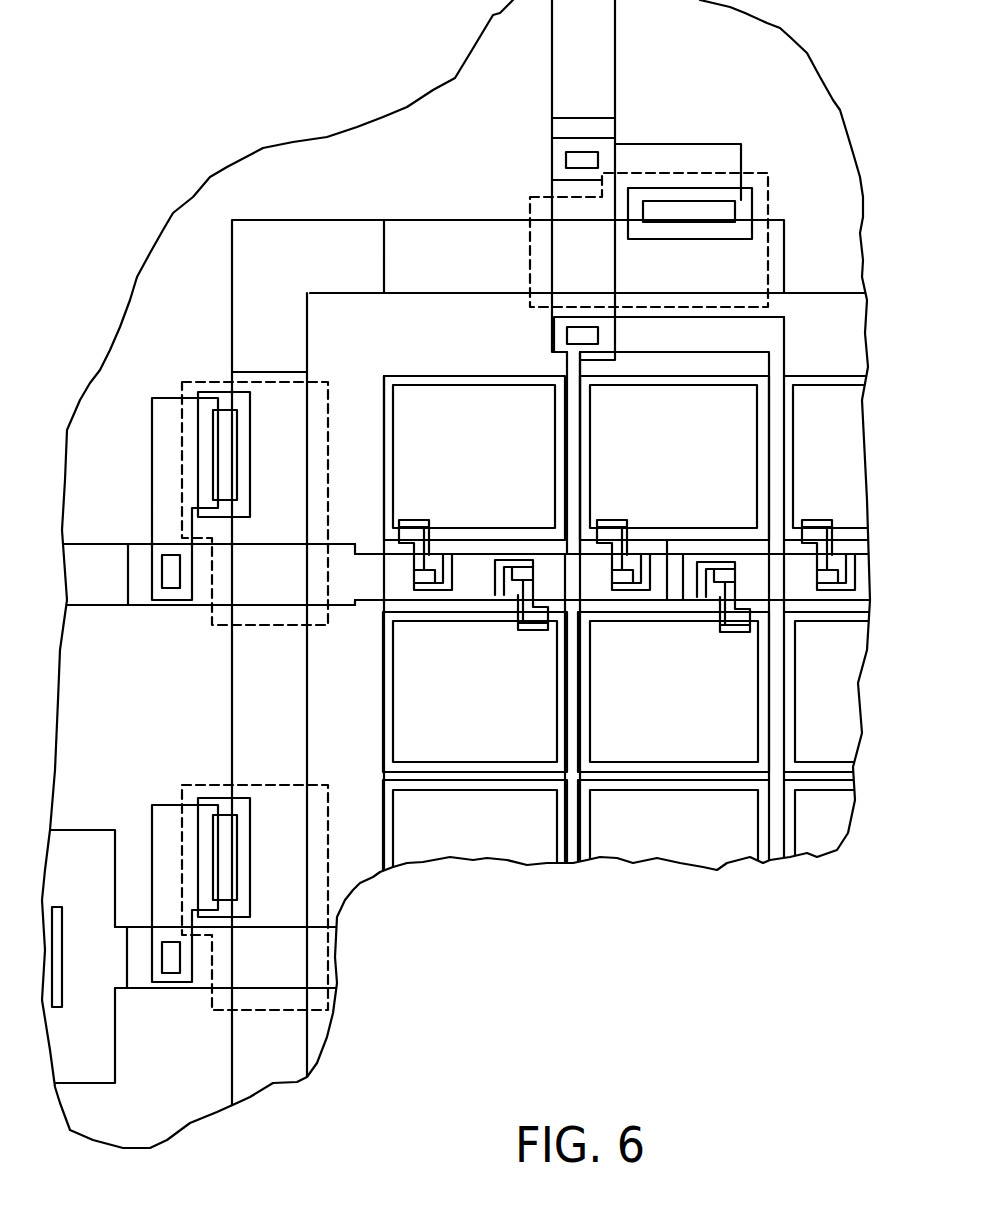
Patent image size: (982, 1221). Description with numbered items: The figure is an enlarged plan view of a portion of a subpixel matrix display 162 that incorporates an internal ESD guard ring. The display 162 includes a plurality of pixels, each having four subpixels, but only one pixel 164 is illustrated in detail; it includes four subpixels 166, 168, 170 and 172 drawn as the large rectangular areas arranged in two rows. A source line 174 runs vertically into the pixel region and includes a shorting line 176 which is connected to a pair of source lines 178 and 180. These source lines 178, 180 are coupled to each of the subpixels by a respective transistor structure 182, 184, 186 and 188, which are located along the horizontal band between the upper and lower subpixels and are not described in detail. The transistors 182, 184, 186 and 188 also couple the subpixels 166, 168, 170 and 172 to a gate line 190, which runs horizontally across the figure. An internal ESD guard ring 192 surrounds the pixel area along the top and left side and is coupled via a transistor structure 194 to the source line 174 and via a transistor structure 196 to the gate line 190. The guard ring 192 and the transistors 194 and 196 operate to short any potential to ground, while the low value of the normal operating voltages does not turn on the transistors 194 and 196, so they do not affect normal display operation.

The display 162 is at (383, 168).
The pixel 164 is at (435, 372).
The subpixel 166 is at (505, 455).
The subpixel 168 is at (704, 455).
The subpixel 170 is at (505, 710).
The subpixel 172 is at (706, 718).
The source line 174 is at (607, 83).
The shorting line 176 is at (775, 333).
The source line 178 is at (567, 368).
The source line 180 is at (773, 400).
The transistor structure 182 is at (430, 518).
The transistor structure 184 is at (520, 620).
The transistor structure 186 is at (630, 520).
The transistor structure 188 is at (716, 622).
The gate line 190 is at (103, 590).
The internal ESD guard ring 192 is at (327, 274).
The transistor structure 194 is at (720, 143).
The transistor structure 196 is at (165, 393).